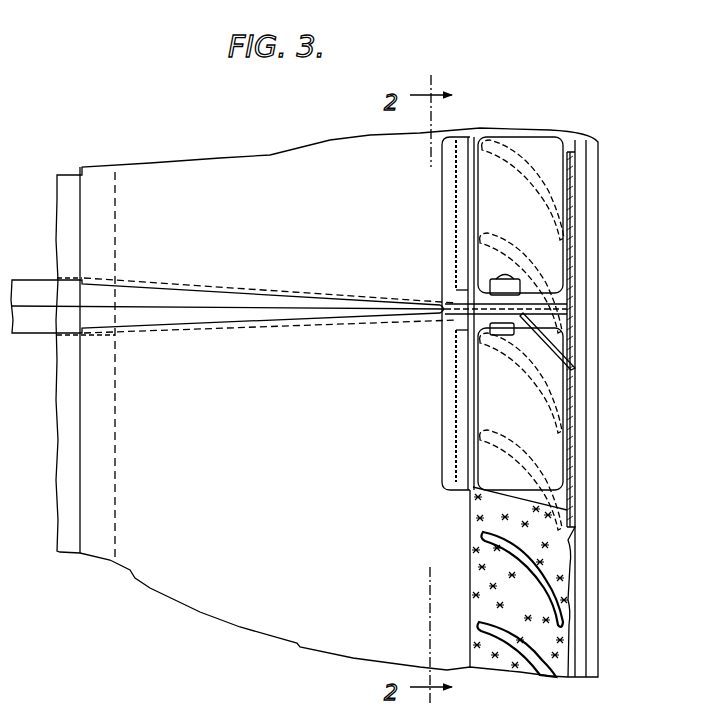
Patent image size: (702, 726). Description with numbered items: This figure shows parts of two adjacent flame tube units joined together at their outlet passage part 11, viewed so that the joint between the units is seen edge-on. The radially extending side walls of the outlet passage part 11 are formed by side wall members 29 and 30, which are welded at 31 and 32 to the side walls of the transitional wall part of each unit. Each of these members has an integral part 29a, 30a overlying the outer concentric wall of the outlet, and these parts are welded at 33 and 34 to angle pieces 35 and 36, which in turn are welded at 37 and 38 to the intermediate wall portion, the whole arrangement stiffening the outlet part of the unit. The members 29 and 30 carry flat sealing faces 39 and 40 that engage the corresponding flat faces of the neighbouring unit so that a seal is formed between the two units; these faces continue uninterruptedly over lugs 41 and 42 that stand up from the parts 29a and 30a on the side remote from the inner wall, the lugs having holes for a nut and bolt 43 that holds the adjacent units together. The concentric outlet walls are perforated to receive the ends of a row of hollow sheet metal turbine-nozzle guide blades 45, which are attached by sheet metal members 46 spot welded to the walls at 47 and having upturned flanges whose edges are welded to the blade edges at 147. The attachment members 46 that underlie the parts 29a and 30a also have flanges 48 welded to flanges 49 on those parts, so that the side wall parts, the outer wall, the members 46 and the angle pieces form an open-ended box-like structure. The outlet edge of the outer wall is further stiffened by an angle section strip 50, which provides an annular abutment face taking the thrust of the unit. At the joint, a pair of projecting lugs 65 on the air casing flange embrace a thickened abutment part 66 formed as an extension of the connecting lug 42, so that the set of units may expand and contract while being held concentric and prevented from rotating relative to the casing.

The outlet passage part 11 is at (277, 331).
The side wall member 29 is at (455, 318).
The integral part of side wall member 29a is at (485, 472).
The side wall member 30 is at (458, 306).
The integral part of side wall member 30a is at (542, 155).
The weld 31 is at (406, 316).
The weld 32 is at (408, 302).
The weld 33 is at (470, 428).
The weld 34 is at (470, 201).
The angle piece 35 is at (447, 419).
The angle piece 36 is at (447, 183).
The weld 37 is at (457, 401).
The weld 38 is at (455, 229).
The flat sealing face 39 is at (446, 335).
The flat sealing face 40 is at (453, 305).
The lug 41 is at (530, 318).
The lug 42 is at (523, 304).
The nut and bolt 43 is at (560, 337).
The turbine-nozzle guide blade 45 is at (480, 538).
The sheet metal blade attachment member 46 is at (475, 576).
The spot weld 47 is at (500, 607).
The flange 48 is at (570, 481).
The flange 49 is at (572, 500).
The angle section strip 50 is at (590, 557).
The projecting lug 65 is at (572, 260).
The thickened abutment part 66 is at (563, 297).
The weld 147 is at (497, 558).